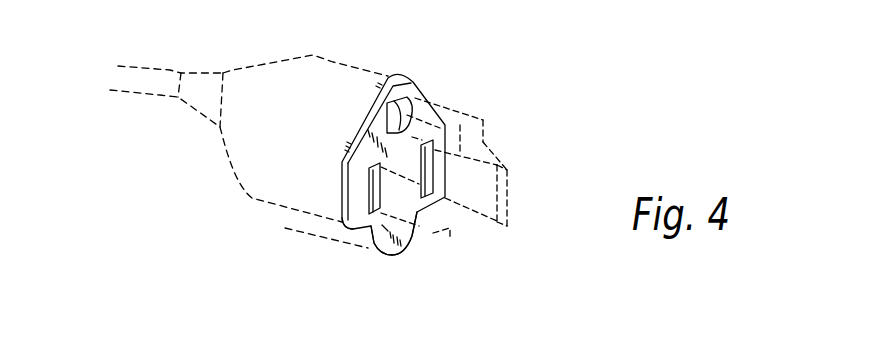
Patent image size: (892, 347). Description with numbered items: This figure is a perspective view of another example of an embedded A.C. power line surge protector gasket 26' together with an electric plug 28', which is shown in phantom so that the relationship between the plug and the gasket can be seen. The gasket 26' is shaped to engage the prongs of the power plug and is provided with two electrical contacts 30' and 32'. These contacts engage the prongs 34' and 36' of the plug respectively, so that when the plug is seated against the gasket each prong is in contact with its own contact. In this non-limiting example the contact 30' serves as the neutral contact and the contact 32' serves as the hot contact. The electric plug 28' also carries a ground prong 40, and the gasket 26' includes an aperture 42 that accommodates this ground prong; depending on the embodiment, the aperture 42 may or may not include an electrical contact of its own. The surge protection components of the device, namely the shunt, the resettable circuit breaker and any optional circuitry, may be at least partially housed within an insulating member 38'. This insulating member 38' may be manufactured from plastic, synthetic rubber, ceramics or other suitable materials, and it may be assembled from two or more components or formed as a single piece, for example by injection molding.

The embedded A.C. power line surge protector gasket 26' is at (401, 141).
The electric plug 28' is at (250, 130).
The electrical contact 30' is at (465, 174).
The electrical contact 32' is at (329, 253).
The prong 34' is at (503, 188).
The prong 36' is at (409, 252).
The insulating member 38' is at (312, 203).
The ground prong 40 is at (463, 113).
The aperture 42 is at (409, 98).